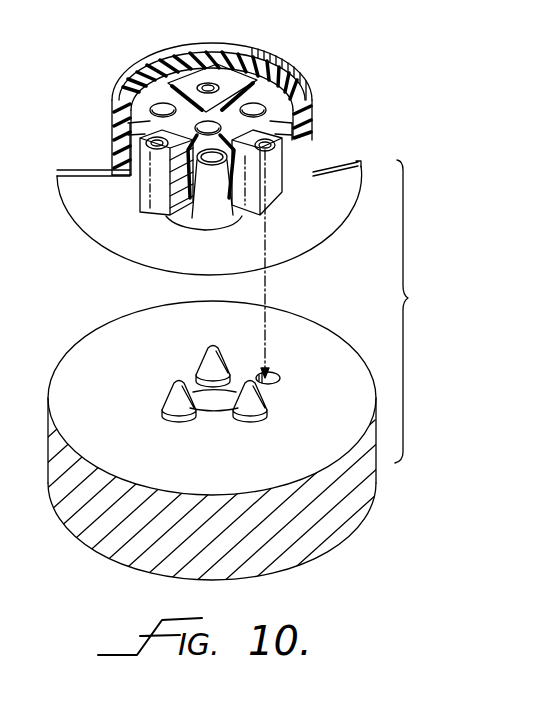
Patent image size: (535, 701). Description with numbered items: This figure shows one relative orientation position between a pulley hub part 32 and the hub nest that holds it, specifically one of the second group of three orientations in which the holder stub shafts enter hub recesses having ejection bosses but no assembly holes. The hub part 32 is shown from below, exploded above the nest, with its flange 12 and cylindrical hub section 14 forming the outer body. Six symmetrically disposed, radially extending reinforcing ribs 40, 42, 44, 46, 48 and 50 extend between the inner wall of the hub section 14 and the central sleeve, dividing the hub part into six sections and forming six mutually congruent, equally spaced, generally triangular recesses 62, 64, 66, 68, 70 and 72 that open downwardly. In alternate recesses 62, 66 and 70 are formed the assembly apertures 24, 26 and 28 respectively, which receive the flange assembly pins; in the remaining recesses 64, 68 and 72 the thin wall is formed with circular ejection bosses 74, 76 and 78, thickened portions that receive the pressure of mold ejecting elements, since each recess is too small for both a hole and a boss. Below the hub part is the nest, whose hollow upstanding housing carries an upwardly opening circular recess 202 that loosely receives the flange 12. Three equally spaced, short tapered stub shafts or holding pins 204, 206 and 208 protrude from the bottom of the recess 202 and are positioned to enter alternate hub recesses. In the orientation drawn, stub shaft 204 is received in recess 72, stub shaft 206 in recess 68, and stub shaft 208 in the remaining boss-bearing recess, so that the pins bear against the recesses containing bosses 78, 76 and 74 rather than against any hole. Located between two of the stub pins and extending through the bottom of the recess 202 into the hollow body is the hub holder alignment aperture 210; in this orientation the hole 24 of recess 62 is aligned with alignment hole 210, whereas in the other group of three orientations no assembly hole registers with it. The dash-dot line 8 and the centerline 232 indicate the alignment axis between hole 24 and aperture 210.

The fixture assembly 8 is at (42, 364).
The flange 12 is at (67, 200).
The hub section 14 is at (310, 118).
The aperture 24 is at (292, 120).
The aperture 26 is at (199, 82).
The aperture 28 is at (127, 128).
The hub part 32 is at (74, 244).
The reinforcing rib 40 is at (263, 72).
The reinforcing rib 42 is at (160, 72).
The reinforcing rib 44 is at (133, 200).
The reinforcing rib 46 is at (172, 208).
The reinforcing rib 48 is at (242, 230).
The reinforcing rib 50 is at (283, 194).
The recess 62 is at (288, 143).
The recess 64 is at (282, 115).
The recess 66 is at (233, 82).
The recess 68 is at (155, 98).
The recess 70 is at (110, 155).
The recess 72 is at (196, 196).
The circular boss 74 is at (300, 92).
The circular boss 76 is at (153, 110).
The circular boss 78 is at (208, 166).
The circular recess 202 is at (92, 340).
The holding pin 204 is at (205, 352).
The holding pin 206 is at (163, 391).
The holding pin 208 is at (266, 398).
The hub holder alignment aperture 210 is at (278, 382).
The axis line 232 is at (268, 293).